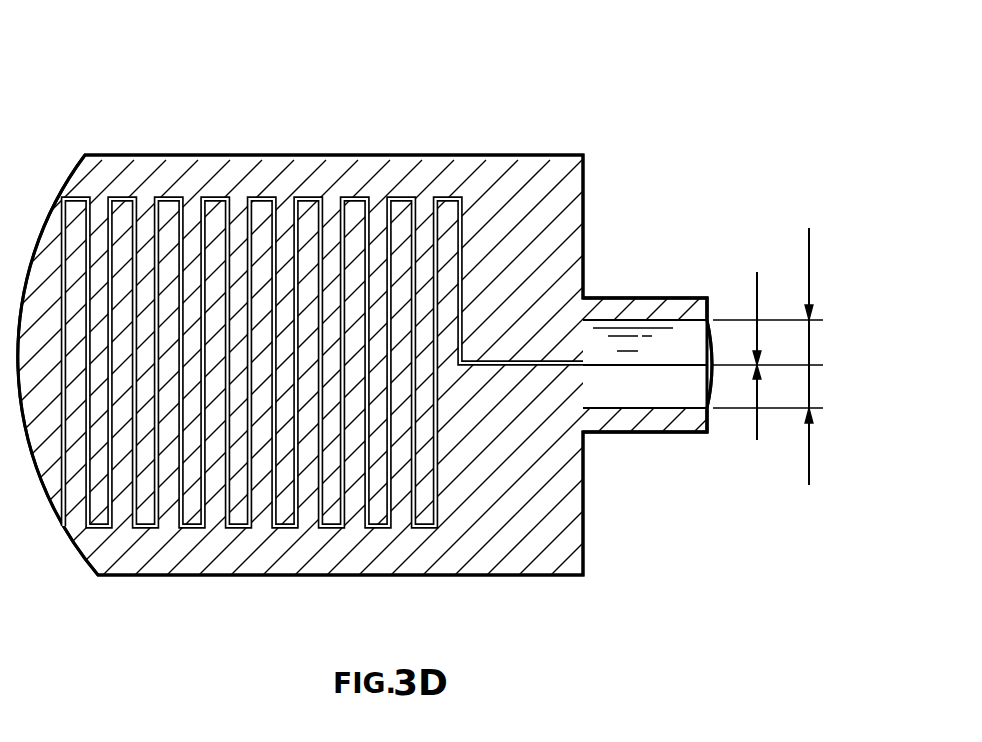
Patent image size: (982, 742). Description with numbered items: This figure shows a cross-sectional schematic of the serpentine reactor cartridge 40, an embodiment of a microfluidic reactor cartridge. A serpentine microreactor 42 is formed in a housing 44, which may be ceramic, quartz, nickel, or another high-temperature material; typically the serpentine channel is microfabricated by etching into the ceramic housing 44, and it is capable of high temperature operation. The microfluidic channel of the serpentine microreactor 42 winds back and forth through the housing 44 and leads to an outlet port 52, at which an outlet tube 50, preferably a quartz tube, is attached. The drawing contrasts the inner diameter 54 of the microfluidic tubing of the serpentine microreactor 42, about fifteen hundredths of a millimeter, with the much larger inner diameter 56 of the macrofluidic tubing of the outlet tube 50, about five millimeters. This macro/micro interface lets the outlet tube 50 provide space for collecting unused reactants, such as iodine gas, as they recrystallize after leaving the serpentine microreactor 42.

The serpentine reactor cartridge 40 is at (133, 117).
The serpentine microreactor 42 is at (258, 195).
The housing 44 is at (460, 166).
The outlet tube 50 is at (688, 330).
The outlet port 52 is at (588, 362).
The inner diameter of the microfluidic tubing 54 is at (760, 283).
The inner diameter of the macrofluidic tubing 56 is at (811, 262).